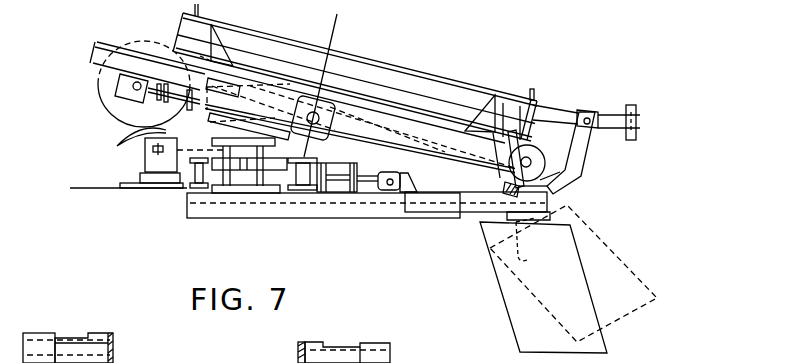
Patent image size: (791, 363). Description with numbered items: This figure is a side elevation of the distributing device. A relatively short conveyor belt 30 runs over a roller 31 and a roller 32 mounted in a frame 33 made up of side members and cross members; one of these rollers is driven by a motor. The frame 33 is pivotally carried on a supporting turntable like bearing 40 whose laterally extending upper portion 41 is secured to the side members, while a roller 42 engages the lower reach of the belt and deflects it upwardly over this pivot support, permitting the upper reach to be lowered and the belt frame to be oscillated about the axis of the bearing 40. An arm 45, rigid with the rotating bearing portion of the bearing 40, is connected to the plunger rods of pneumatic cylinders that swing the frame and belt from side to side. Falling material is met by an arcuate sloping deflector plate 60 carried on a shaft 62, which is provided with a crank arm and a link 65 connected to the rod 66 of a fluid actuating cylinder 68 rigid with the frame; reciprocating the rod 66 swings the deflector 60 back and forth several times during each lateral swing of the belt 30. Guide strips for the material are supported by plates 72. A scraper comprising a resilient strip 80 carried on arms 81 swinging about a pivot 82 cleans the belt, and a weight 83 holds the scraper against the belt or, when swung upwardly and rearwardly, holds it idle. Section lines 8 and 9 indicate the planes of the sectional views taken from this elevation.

The conveyor belt 30 is at (167, 45).
The frame 33 is at (95, 48).
The roller 31 is at (110, 103).
The upper portion 41 is at (209, 121).
The roller 42 is at (336, 126).
The section line 8- 8 is at (322, 22).
The section line 9- 9 is at (650, 5).
The roller 32 is at (537, 157).
The pivot 82 is at (588, 114).
The weight 83 is at (637, 129).
The arms 81 is at (586, 171).
The resilient strip 80 is at (560, 190).
The supporting turntable like bearing 40 is at (240, 155).
The link 65 is at (465, 190).
The fluid actuating cylinder 68 is at (328, 192).
The rod 66 is at (367, 178).
The arm 45 is at (180, 172).
The deflector plate 60 is at (630, 257).
The shaft 62 is at (522, 250).
The plates 72 is at (114, 361).